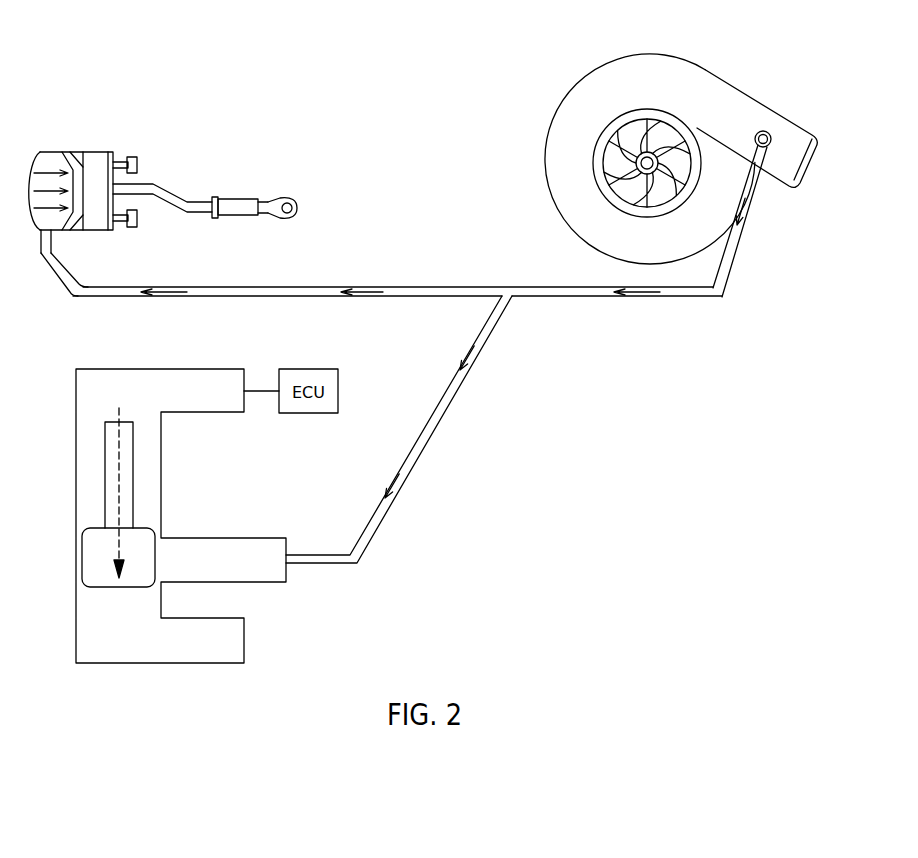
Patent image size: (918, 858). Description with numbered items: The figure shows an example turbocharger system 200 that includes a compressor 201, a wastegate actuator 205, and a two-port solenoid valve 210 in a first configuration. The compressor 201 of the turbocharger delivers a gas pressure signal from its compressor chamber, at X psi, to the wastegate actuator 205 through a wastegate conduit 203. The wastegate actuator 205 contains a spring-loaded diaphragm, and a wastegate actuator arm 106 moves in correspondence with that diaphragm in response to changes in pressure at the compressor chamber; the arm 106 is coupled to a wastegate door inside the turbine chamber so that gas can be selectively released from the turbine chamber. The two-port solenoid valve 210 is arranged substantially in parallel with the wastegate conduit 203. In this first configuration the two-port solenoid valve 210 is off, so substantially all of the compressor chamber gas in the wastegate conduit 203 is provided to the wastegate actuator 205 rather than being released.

The turbocharger system 200 is at (121, 33).
The compressor 201 is at (708, 66).
The wastegate conduit 203 is at (398, 287).
The wastegate actuator 205 is at (95, 151).
The wastegate actuator arm 106 is at (287, 197).
The two-port solenoid valve 210 is at (160, 368).